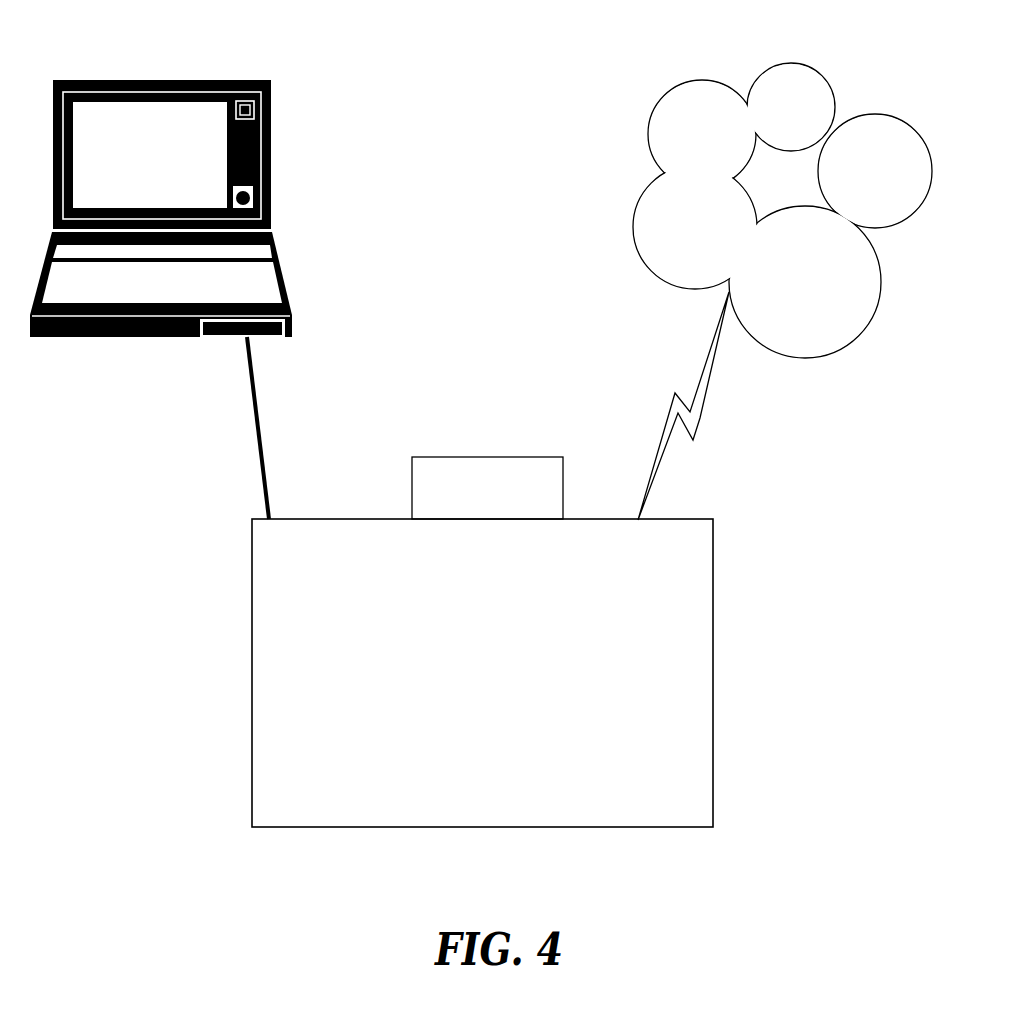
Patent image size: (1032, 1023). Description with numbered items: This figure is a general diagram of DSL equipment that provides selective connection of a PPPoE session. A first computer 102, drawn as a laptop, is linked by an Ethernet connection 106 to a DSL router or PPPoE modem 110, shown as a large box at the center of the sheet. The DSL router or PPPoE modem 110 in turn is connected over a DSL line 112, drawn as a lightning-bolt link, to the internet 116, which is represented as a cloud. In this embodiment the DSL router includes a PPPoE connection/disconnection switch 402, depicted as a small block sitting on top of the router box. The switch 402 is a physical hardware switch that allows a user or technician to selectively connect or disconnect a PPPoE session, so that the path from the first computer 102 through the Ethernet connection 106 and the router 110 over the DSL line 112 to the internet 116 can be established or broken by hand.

The first computer 102 is at (161, 187).
The Ethernet connection 106 is at (245, 428).
The DSL router or PPPoE modem 110 is at (522, 673).
The DSL line 112 is at (710, 406).
The internet 116 is at (782, 190).
The PPPoE connection/disconnection switch 402 is at (492, 466).